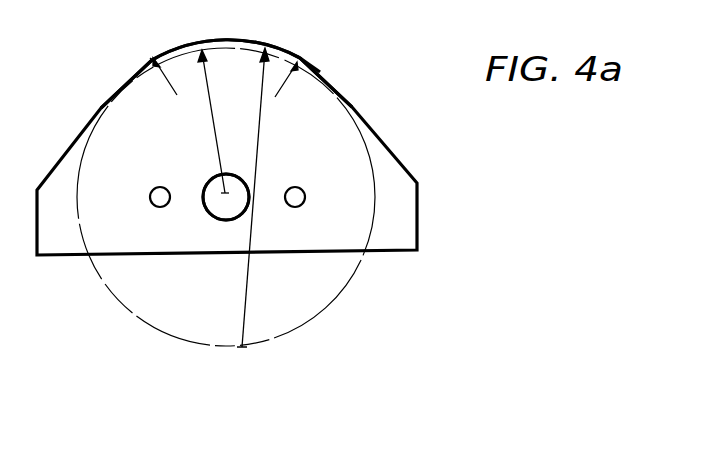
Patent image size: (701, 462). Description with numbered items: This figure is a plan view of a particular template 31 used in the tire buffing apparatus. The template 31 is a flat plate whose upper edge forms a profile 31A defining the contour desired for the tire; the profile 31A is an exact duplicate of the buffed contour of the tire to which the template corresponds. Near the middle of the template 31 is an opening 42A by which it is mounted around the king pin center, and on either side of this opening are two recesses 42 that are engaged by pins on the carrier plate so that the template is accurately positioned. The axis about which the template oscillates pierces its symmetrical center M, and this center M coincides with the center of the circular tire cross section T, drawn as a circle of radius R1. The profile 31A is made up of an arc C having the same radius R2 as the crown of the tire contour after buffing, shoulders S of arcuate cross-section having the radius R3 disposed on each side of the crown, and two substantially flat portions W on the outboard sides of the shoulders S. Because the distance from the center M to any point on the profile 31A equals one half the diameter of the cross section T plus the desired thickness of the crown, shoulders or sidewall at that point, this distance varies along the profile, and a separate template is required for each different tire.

The template 31 is at (306, 138).
The profile 31A is at (313, 58).
The recesses 42 is at (152, 204).
The opening 42A is at (244, 213).
The symmetrical center M is at (213, 212).
The circular tire cross section T is at (330, 303).
The arc C is at (258, 45).
The shoulders S is at (150, 58).
The flat portions W is at (101, 108).
The radius of circular tire cross section R1 is at (212, 100).
The radius of arc R2 is at (258, 146).
The radius of shoulders R3 is at (226, 77).